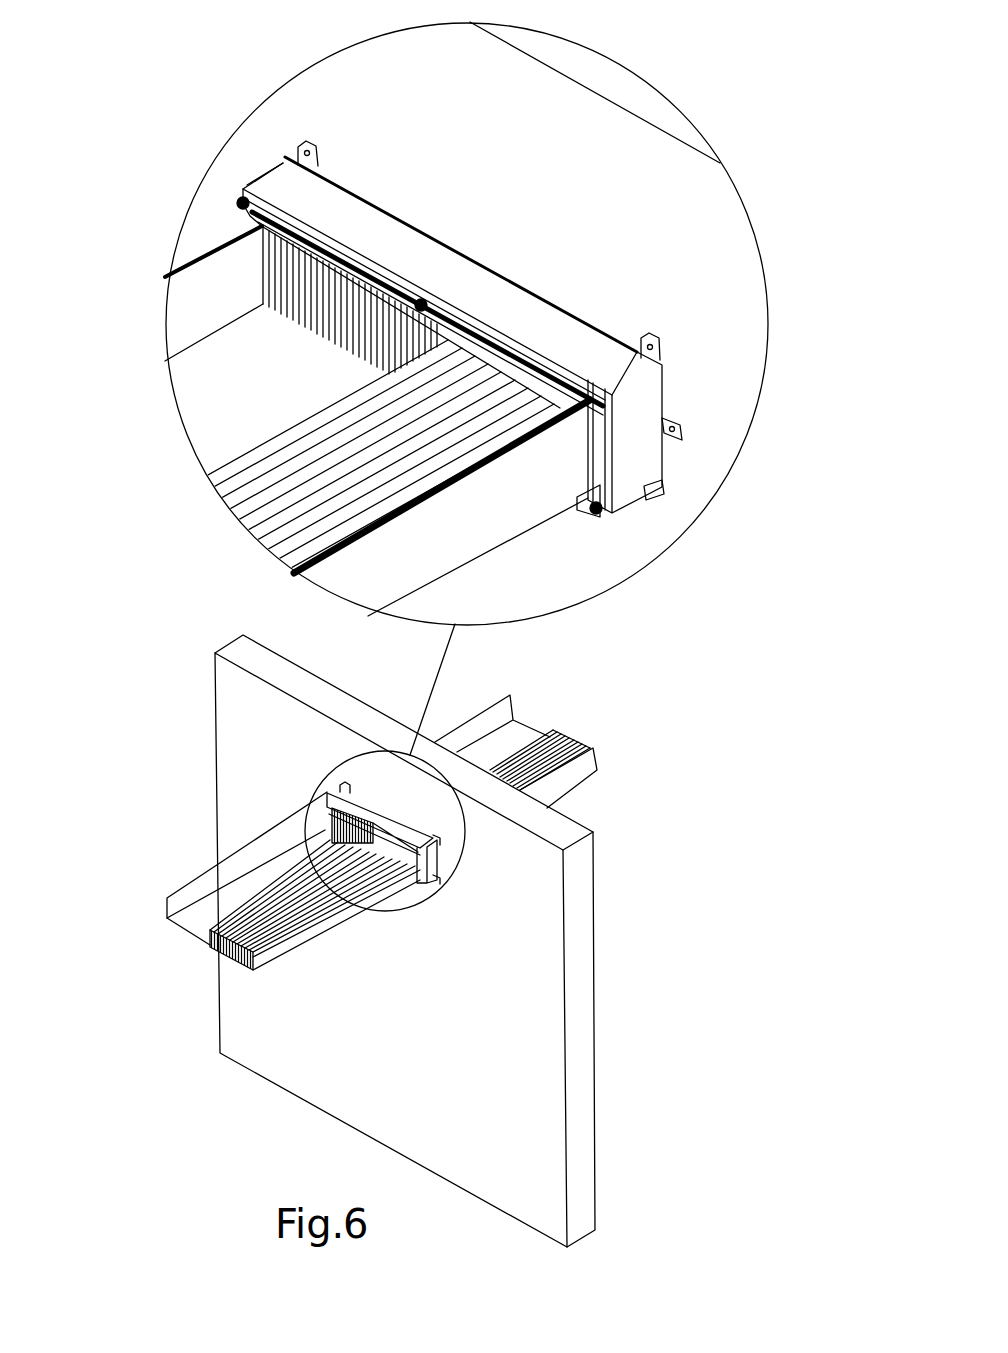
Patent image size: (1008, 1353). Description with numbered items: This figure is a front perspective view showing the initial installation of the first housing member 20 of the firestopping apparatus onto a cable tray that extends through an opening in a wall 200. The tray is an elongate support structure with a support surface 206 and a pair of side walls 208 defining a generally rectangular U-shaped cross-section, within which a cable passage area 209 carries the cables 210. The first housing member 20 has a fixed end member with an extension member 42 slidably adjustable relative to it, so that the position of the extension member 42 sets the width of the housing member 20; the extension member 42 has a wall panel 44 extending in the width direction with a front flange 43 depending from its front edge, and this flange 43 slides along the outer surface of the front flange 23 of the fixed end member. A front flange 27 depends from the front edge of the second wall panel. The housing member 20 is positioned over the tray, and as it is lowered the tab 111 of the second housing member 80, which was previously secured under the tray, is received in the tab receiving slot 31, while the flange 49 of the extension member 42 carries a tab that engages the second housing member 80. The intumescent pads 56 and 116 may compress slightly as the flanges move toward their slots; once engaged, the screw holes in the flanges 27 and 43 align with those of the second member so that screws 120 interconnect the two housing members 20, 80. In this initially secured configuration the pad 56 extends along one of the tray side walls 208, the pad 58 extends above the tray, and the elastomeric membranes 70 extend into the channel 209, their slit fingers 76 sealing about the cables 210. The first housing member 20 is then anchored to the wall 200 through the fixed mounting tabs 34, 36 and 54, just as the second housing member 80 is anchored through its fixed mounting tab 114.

The first housing member 20 is at (445, 476).
The front flange 23 is at (553, 373).
The front flange 27 is at (633, 420).
The tab receiving slot 31 is at (661, 484).
The fixed mounting tab 34 is at (663, 337).
The fixed mounting tab 36 is at (683, 424).
The extension member 42 is at (520, 307).
The front flange 43 is at (292, 219).
The wall panel 44 is at (337, 190).
The flange 49 is at (283, 163).
The fixed mounting tab 54 is at (307, 143).
The intumescent firestopping material pad 56 is at (586, 465).
The intumescent firestopping material pad 58 is at (483, 277).
The sealing elastomeric membrane 70 is at (241, 248).
The fingers 76 is at (330, 344).
The second housing member 80 is at (579, 518).
The tab 111 is at (651, 497).
The fixed mounting tab 114 is at (667, 490).
The intumescent firestopping material pad 116 is at (237, 215).
The screws 120 is at (243, 203).
The wall 200 is at (557, 1050).
The support surface 206 is at (197, 403).
The side walls 208 is at (345, 625).
The cable passage area 209 is at (219, 385).
The cables 210 is at (457, 454).